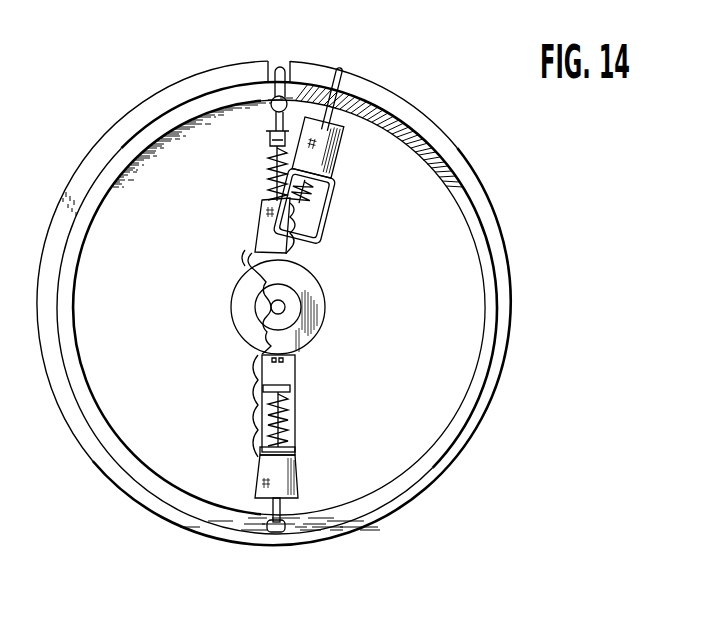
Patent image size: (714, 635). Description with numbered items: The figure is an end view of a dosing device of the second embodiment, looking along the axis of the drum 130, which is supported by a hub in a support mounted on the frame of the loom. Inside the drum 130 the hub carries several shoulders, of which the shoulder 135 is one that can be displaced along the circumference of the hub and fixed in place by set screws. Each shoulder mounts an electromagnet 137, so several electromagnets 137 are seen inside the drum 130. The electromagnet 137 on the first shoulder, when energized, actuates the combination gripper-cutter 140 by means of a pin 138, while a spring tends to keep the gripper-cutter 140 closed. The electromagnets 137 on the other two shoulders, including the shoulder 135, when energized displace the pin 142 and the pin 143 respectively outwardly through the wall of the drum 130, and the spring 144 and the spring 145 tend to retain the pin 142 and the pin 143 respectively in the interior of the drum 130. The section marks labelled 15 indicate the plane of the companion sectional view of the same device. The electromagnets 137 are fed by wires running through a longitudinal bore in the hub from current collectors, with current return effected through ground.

The drum 130 is at (466, 191).
The shoulder 135 is at (319, 306).
The electromagnet 137 is at (335, 162).
The pin 138 is at (268, 173).
The combination gripper-cutter 140 is at (271, 101).
The pin 142 is at (342, 80).
The pin 143 is at (285, 510).
The spring 144 is at (320, 204).
The spring 145 is at (291, 437).
The section line FIG. 15 is at (276, 13).